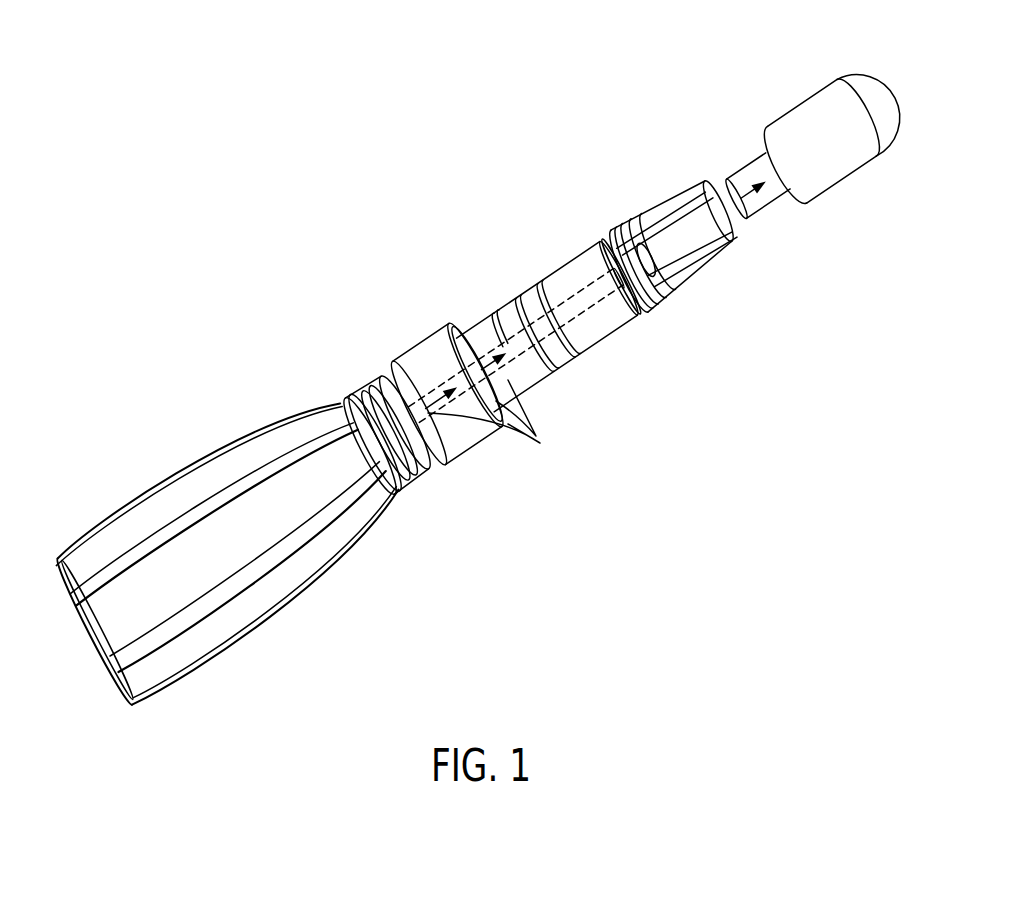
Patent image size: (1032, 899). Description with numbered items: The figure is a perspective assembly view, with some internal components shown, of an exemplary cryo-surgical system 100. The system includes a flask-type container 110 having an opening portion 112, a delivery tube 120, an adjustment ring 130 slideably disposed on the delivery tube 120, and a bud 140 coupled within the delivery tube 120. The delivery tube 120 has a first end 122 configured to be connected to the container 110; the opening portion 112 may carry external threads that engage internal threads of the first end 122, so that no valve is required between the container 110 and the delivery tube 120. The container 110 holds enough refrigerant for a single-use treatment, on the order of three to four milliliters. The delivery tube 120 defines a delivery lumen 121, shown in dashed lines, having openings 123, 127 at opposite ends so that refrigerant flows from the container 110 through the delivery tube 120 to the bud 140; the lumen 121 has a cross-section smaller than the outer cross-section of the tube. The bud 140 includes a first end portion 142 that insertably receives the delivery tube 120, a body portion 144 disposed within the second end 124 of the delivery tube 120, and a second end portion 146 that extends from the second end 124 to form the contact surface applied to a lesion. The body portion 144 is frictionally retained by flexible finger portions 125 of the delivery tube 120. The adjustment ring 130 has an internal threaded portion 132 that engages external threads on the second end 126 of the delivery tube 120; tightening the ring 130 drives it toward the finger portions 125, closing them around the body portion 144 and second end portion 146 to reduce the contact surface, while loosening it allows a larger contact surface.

The cryo-surgical system 100 is at (411, 206).
The container 110 is at (186, 466).
The opening portion 112 is at (428, 482).
The delivery tube 120 is at (590, 352).
The delivery lumen 121 is at (606, 318).
The first end 122 is at (418, 352).
The opening 123 is at (540, 443).
The second end 124 is at (598, 245).
The finger portions 125 is at (599, 224).
The second end 126 is at (660, 300).
The opening 127 is at (602, 238).
The adjustment ring 130 is at (485, 324).
The internal threaded portion 132 is at (522, 303).
The bud 140 is at (813, 121).
The first end portion 142 is at (742, 178).
The body portion 144 is at (836, 186).
The second end portion 146 is at (877, 86).